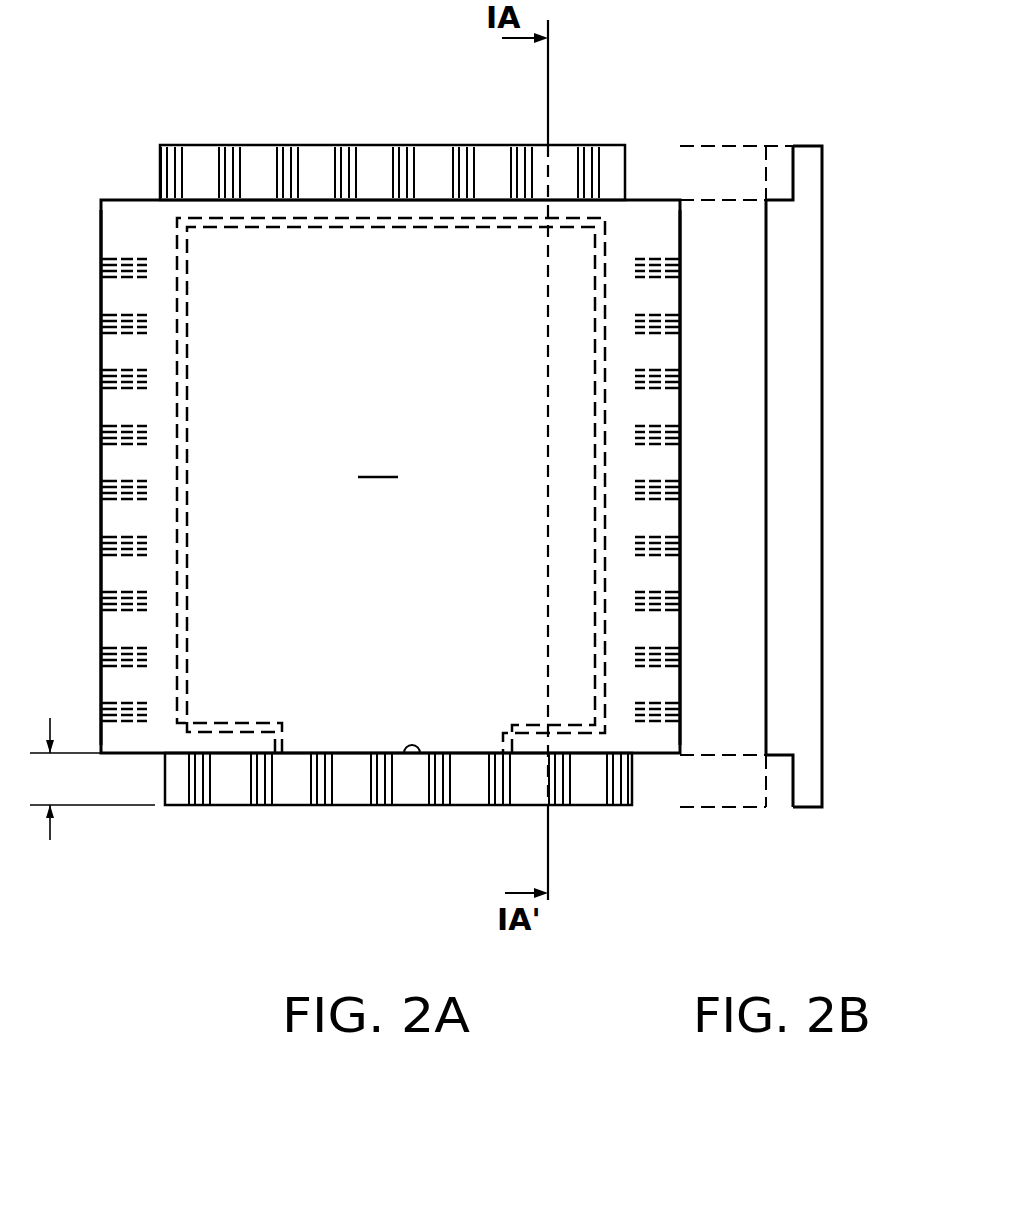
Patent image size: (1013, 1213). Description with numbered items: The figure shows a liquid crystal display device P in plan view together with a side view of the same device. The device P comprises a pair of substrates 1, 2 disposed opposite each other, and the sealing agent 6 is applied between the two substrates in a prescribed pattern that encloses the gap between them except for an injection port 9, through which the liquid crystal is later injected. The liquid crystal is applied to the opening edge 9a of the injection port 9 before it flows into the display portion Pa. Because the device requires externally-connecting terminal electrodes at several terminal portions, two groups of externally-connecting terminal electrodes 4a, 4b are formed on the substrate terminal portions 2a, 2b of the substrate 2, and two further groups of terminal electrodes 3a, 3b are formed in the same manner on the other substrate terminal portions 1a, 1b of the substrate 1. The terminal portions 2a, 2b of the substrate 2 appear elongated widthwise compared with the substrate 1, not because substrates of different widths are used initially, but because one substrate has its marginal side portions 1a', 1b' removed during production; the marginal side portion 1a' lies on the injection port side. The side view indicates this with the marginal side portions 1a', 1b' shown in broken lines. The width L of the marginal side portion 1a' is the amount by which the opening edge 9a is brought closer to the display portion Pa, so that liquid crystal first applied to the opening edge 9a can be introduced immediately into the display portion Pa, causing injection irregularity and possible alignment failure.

In FIG. 2A, the substrate 1 is at (432, 190).
In FIG. 2A, the substrate terminal portion 1a is at (70, 477).
In FIG. 2A, the substrate terminal portion 1b is at (695, 476).
In FIG. 2B, the marginal side portion 1a' is at (736, 817).
In FIG. 2B, the marginal side portion 1b' is at (736, 140).
In FIG. 2A, the substrate 2 is at (497, 140).
In FIG. 2A, the substrate terminal portion 2a is at (478, 805).
In FIG. 2B, the substrate terminal portion 2a is at (808, 808).
In FIG. 2A, the substrate terminal portion 2b is at (318, 145).
In FIG. 2B, the substrate terminal portion 2b is at (810, 146).
In FIG. 2A, the externally-connecting terminal electrodes 3a is at (103, 327).
In FIG. 2A, the externally-connecting terminal electrodes 3b is at (680, 328).
In FIG. 2A, the externally-connecting terminal electrodes 4a is at (258, 805).
In FIG. 2A, the externally-connecting terminal electrodes 4b is at (227, 145).
In FIG. 2A, the sealing agent 6 is at (178, 723).
In FIG. 2A, the injection port 9 is at (354, 738).
In FIG. 2A, the opening edge 9a is at (417, 753).
In FIG. 2A, the liquid crystal display device P is at (123, 84).
In FIG. 2B, the liquid crystal display device P is at (812, 68).
In FIG. 2A, the display portion Pa is at (378, 462).
In FIG. 2A, the width of the marginal side portion L is at (92, 779).